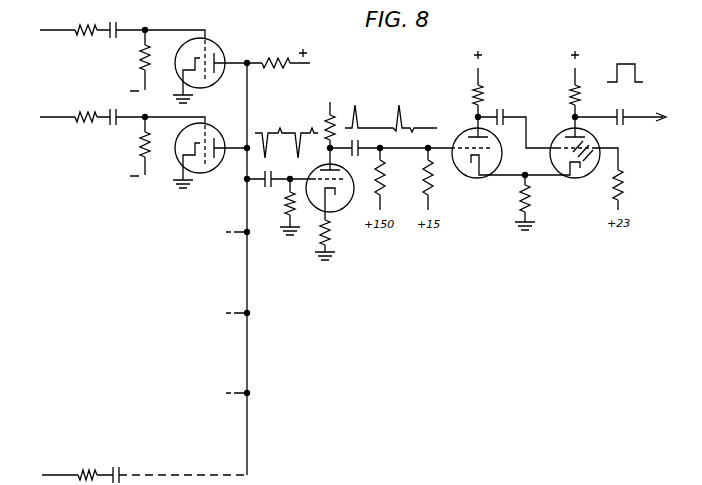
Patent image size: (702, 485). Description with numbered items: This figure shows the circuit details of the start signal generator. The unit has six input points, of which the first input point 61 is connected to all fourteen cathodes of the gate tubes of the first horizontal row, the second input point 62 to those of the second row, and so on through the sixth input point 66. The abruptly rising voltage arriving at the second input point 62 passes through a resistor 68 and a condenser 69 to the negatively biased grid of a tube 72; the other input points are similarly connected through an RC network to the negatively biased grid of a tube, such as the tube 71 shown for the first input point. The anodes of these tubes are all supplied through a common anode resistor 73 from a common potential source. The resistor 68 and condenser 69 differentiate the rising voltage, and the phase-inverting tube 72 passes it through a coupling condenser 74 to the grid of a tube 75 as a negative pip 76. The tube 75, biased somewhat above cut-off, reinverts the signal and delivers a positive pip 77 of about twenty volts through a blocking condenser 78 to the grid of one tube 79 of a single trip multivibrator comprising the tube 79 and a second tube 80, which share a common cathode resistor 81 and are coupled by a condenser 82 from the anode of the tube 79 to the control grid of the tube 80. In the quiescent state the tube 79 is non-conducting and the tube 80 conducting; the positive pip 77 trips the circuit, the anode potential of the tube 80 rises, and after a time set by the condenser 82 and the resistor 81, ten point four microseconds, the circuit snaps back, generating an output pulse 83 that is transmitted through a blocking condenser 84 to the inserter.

The first input point 61 is at (61, 35).
The second input point 62 is at (59, 122).
The sixth input point 66 is at (60, 472).
The resistor 68 is at (140, 147).
The condenser 69 is at (114, 110).
The first diode tube 71 is at (218, 52).
The tube 72 is at (212, 174).
The common anode resistor 73 is at (276, 60).
The coupling condenser 74 is at (268, 189).
The tube 75 is at (338, 210).
The negative pip 76 is at (296, 150).
The positive pip 77 is at (358, 112).
The blocking condenser 78 is at (364, 146).
The tube 79 is at (468, 178).
The tube 80 is at (583, 178).
The common cathode resistor 81 is at (533, 198).
The condenser 82 is at (500, 109).
The output pulse 83 is at (642, 70).
The blocking condenser 84 is at (625, 126).